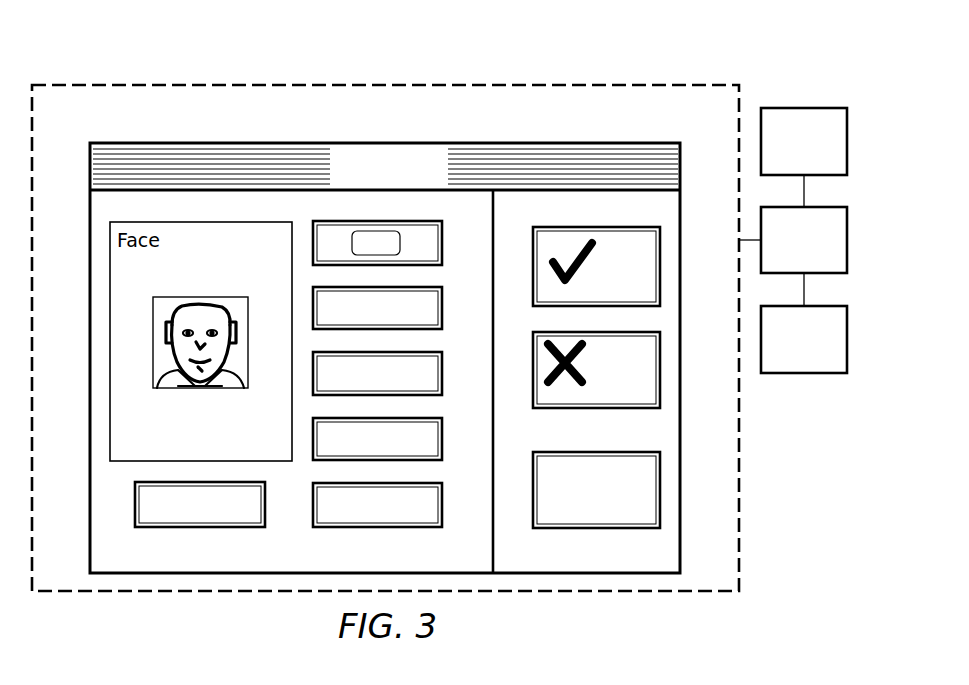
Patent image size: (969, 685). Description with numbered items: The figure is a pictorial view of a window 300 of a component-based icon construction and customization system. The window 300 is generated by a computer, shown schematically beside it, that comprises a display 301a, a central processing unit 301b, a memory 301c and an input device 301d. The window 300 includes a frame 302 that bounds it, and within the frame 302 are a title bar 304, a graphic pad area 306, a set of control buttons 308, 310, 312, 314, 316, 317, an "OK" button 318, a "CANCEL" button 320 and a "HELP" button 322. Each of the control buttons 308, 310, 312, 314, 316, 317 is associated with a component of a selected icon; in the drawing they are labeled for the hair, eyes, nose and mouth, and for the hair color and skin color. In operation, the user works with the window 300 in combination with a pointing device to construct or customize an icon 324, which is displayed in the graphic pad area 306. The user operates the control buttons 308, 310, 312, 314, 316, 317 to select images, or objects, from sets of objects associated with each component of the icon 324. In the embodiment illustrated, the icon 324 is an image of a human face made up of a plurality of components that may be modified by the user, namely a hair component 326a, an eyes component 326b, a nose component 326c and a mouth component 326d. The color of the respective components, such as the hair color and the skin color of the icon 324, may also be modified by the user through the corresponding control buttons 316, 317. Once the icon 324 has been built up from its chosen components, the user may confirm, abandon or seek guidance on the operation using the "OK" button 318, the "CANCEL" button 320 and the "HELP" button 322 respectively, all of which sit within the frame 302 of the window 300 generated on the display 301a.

The window 300 is at (648, 66).
The display 301a is at (741, 524).
The central processing unit 301b is at (848, 242).
The memory 301c is at (804, 374).
The input device 301d is at (804, 107).
The frame 302 is at (252, 141).
The title bar 304 is at (618, 152).
The graphic pad area 306 is at (176, 447).
The control button 308 is at (416, 218).
The control button 310 is at (416, 284).
The control button 312 is at (416, 349).
The control button 314 is at (416, 415).
The control button 316 is at (416, 480).
The control button 317 is at (247, 518).
The OK button 318 is at (650, 268).
The CANCEL button 320 is at (650, 354).
The HELP button 322 is at (650, 494).
The icon 324 is at (161, 340).
The hair component 326a is at (200, 308).
The eyes component 326b is at (214, 333).
The nose component 326c is at (206, 346).
The mouth component 326d is at (196, 360).